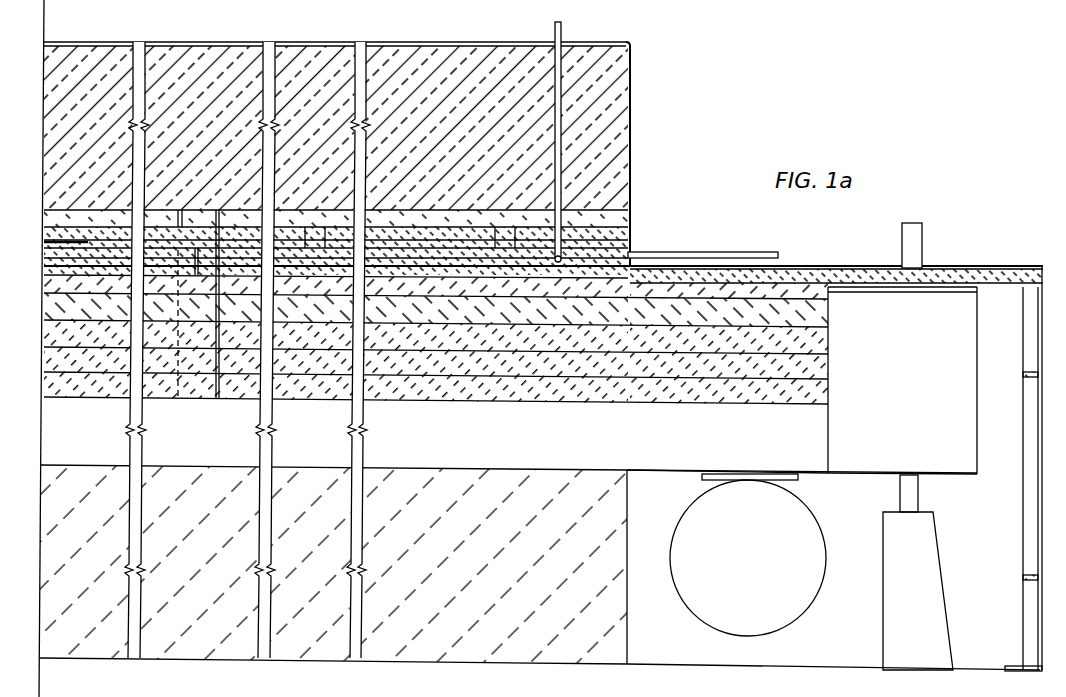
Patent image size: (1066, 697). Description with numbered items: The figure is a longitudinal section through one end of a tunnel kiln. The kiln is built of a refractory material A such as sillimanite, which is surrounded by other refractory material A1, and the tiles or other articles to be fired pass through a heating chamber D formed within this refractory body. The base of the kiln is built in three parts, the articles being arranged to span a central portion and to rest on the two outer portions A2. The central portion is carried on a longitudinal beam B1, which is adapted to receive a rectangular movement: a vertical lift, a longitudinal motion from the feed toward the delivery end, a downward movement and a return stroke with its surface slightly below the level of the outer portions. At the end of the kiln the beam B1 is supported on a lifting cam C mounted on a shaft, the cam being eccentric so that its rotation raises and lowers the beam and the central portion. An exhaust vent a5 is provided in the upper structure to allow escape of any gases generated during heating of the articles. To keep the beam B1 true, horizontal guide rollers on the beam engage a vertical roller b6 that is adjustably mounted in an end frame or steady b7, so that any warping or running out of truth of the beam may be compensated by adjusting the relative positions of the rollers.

The refractory material A1 is at (207, 57).
The exhaust vent a5 is at (561, 23).
The refractory material A is at (44, 311).
The heating chamber D is at (623, 232).
The outer portion A2 is at (668, 277).
The vertical roller b6 is at (913, 252).
The longitudinal beam B1 is at (494, 445).
The lifting cam C is at (751, 561).
The end frame b7 is at (1028, 549).